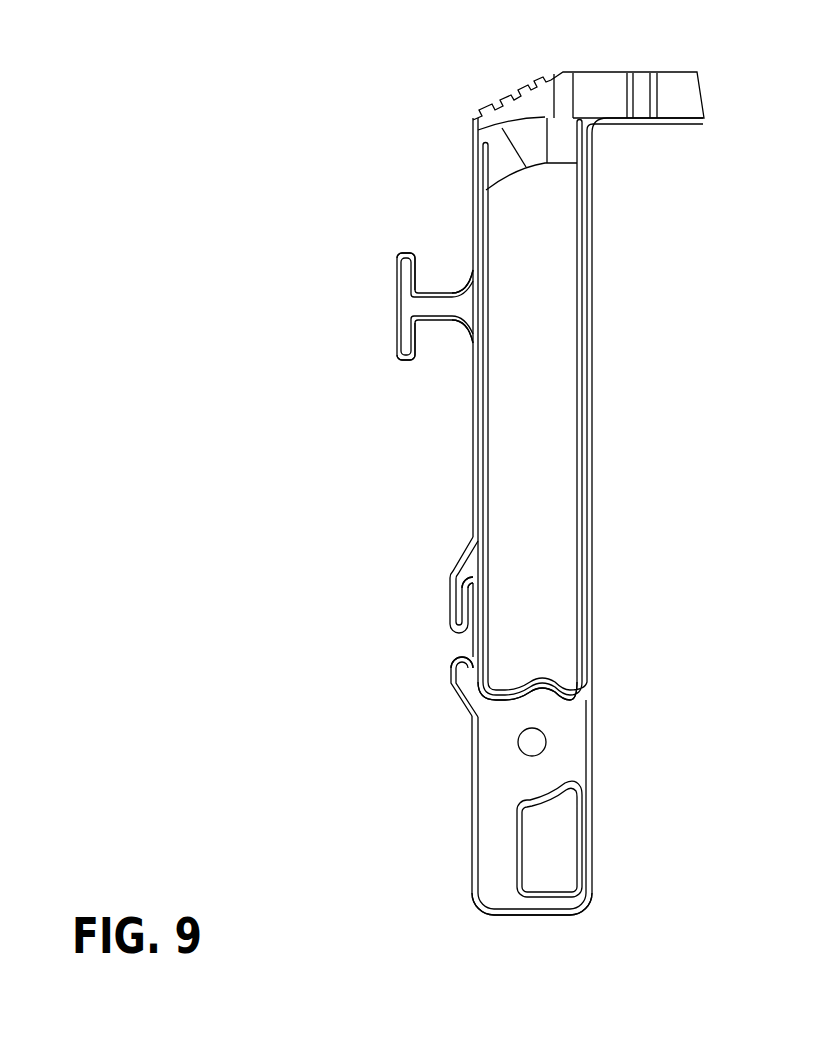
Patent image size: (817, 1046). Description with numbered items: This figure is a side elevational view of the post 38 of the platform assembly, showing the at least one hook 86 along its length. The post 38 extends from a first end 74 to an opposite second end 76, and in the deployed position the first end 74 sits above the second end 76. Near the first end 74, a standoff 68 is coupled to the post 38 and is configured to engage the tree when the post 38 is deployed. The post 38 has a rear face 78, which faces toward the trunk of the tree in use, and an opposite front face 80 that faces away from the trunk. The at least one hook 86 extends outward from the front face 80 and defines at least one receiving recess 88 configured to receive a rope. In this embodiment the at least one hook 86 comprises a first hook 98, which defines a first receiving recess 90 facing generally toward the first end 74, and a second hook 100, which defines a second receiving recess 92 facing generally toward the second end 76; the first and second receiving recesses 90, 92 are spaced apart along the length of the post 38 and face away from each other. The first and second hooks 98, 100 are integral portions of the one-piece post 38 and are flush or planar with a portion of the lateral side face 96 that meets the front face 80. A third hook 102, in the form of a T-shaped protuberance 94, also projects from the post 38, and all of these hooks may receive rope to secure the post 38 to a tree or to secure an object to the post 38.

The post 38 is at (597, 382).
The standoff 68 is at (680, 98).
The first end 74 is at (480, 117).
The second end 76 is at (522, 915).
The rear face 78 is at (592, 480).
The front face 80 is at (476, 447).
The at least one hook 86 is at (388, 303).
The at least one receiving recess 88 is at (436, 266).
The first receiving recess 90 is at (482, 662).
The second receiving recess 92 is at (482, 590).
The T-shaped protuberance 94 is at (405, 345).
The lateral side face 96 is at (548, 700).
The first hook 98 is at (452, 663).
The second hook 100 is at (455, 595).
The third hook 102 is at (397, 272).